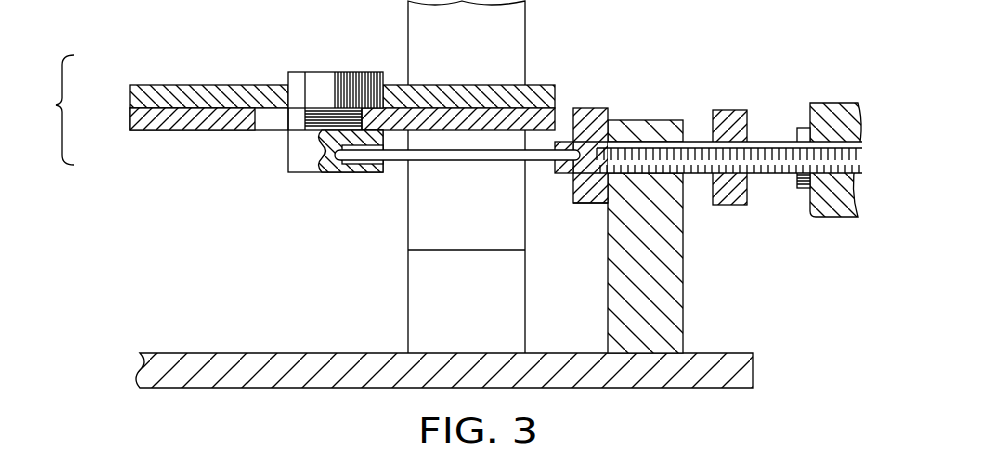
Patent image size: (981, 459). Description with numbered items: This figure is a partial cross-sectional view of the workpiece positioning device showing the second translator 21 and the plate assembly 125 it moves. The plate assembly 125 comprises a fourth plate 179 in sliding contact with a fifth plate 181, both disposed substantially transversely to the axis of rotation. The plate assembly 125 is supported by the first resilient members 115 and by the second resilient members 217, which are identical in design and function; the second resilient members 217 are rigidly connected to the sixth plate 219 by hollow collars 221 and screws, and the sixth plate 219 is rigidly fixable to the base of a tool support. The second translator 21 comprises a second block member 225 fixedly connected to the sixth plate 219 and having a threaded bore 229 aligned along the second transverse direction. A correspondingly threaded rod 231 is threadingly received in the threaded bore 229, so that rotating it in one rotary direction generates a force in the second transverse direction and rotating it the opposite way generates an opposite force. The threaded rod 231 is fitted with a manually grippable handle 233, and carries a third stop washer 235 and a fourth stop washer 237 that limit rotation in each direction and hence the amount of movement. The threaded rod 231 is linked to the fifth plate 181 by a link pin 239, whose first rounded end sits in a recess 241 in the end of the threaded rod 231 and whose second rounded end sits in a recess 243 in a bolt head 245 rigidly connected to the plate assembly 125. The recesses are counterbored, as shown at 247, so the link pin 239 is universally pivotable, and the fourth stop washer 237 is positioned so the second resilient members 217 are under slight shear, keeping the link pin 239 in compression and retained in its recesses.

The second translator 21 is at (738, 65).
The first resilient members 115 is at (408, 28).
The plate assembly 125 is at (47, 110).
The fourth plate 179 is at (130, 91).
The fifth plate 181 is at (130, 116).
The second resilient members 217 is at (408, 223).
The sixth plate 219 is at (753, 367).
The hollow collars 221 is at (408, 287).
The second block member 225 is at (683, 263).
The threaded bore 229 is at (640, 140).
The threaded rod 231 is at (670, 142).
The manually grippable handle 233 is at (838, 103).
The third stop washer 235 is at (733, 110).
The fourth stop washer 237 is at (592, 203).
The link pin 239 is at (465, 162).
The recess 241 is at (560, 142).
The recess 243 is at (325, 172).
The bolt head 245 is at (288, 152).
The counter bore 247 is at (363, 172).